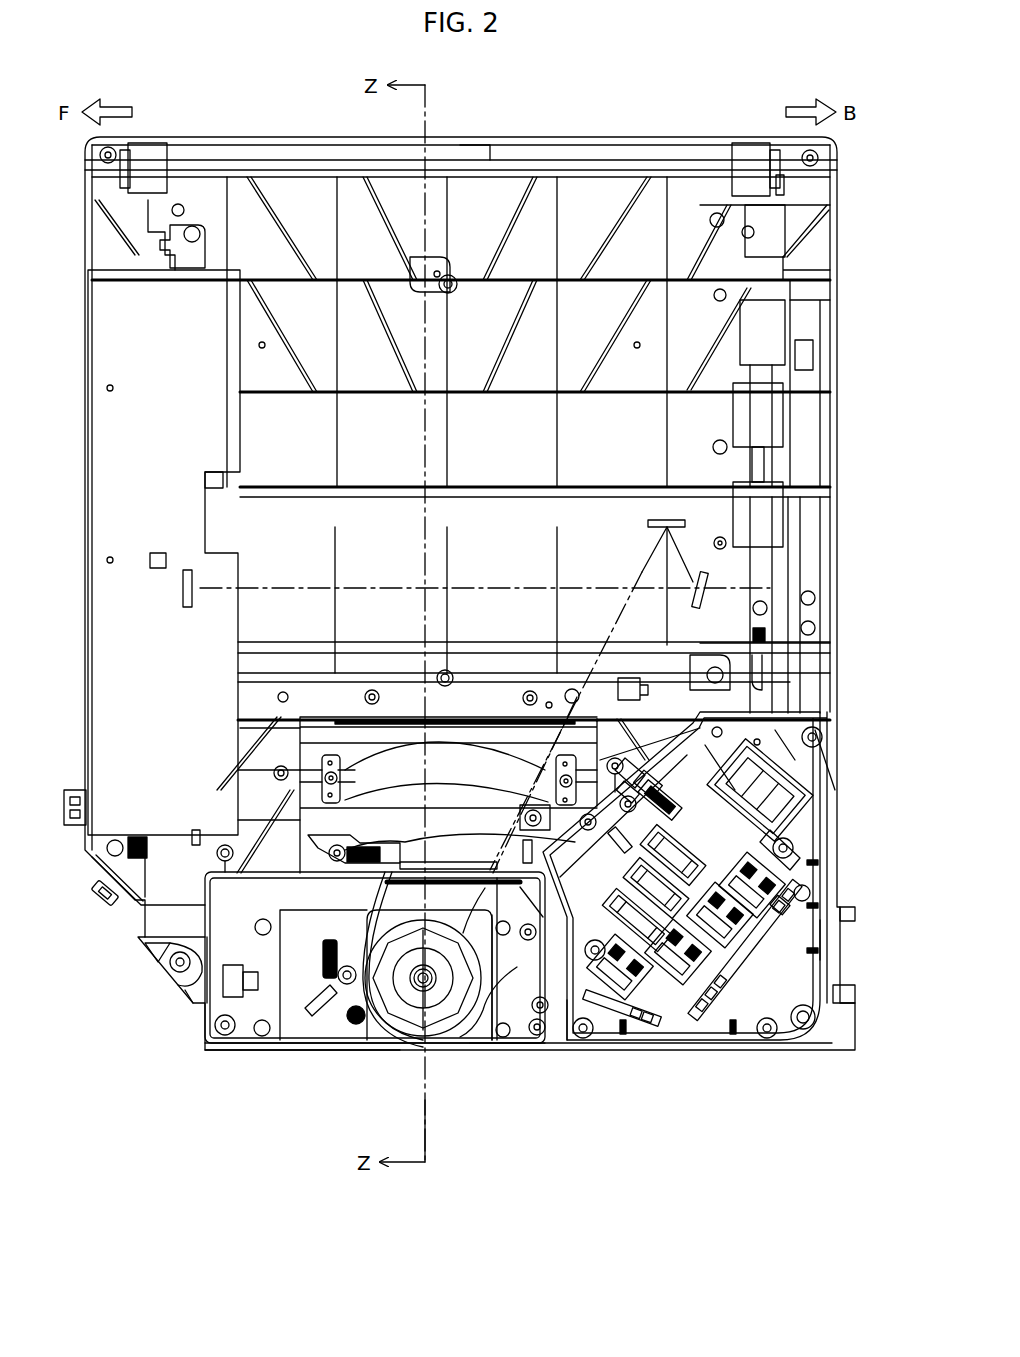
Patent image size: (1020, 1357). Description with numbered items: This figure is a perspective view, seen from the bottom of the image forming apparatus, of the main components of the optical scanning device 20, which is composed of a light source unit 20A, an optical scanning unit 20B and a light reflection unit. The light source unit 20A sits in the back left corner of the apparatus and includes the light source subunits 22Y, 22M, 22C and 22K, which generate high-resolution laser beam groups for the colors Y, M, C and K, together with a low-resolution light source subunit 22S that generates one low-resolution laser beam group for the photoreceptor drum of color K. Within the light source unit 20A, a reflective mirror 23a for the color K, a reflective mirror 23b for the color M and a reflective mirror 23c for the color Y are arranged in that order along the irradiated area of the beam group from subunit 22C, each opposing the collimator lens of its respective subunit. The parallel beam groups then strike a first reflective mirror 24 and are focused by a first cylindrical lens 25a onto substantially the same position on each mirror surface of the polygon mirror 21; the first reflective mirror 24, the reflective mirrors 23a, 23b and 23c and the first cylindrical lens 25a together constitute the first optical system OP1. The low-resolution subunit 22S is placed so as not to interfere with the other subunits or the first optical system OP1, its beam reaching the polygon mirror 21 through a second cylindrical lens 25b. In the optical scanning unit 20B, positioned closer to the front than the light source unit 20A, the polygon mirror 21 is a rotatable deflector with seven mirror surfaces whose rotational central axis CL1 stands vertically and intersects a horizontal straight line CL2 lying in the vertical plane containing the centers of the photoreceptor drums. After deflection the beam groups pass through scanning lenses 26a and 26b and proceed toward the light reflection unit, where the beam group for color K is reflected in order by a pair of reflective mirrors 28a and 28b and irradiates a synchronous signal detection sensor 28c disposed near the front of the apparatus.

The reflective mirror 28a is at (667, 521).
The reflective mirror 28b is at (704, 593).
The synchronous signal detection sensor 28c is at (183, 588).
The first cylindrical lens 25a is at (636, 778).
The second cylindrical lens 25b is at (650, 830).
The first reflective mirror 24 is at (822, 762).
The low-resolution light source subunit 22S is at (785, 820).
The light source subunit 22Y is at (798, 910).
The light source unit 20A is at (797, 935).
The scanning lens 26a is at (400, 848).
The scanning lens 26b is at (372, 768).
The reflective mirror 23a is at (585, 932).
The reflective mirror 23b is at (648, 874).
The reflective mirror 23c is at (687, 862).
The light source subunit 22C is at (606, 1022).
The light source subunit 22K is at (676, 993).
The light source subunit 22M is at (752, 950).
The polygon mirror 21 is at (437, 1012).
The rotational central axis CL1 is at (412, 990).
The optical scanning unit 20B is at (477, 1030).
The optical scanning device 20 is at (383, 1068).
The first optical system OP1 is at (590, 1040).
The horizontal straight line CL2 is at (428, 1133).